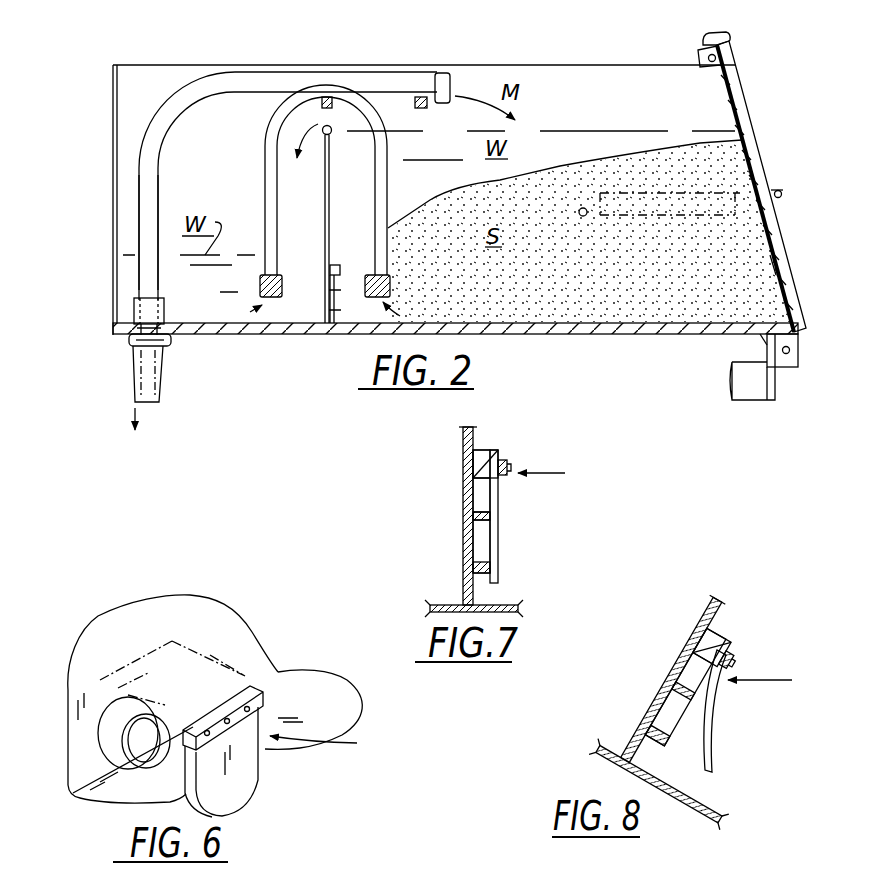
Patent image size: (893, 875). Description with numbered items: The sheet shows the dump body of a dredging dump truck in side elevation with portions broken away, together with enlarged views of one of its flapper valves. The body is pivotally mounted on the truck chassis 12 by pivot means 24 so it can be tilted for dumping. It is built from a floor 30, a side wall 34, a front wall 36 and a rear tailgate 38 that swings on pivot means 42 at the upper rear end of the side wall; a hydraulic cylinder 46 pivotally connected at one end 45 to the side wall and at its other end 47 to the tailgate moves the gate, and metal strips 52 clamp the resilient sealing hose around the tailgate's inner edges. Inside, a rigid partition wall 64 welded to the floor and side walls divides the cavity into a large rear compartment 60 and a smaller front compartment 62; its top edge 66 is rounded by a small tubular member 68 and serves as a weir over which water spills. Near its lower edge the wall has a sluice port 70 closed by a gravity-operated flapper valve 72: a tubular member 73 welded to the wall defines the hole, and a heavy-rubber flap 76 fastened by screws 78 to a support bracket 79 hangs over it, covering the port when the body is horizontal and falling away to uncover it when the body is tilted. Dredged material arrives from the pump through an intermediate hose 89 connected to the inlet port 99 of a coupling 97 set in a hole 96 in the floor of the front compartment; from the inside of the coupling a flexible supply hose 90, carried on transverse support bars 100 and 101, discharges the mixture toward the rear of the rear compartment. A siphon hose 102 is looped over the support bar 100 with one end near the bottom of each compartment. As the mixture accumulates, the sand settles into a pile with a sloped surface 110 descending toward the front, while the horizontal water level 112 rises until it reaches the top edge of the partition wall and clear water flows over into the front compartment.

In FIG. 2, the chassis 12 is at (755, 395).
In FIG. 2, the pivot means 24 is at (800, 350).
In FIG. 2, the floor 30 is at (285, 337).
In FIG. 7, the floor 30 is at (495, 606).
In FIG. 6, the floor 30 is at (303, 718).
In FIG. 8, the floor 30 is at (659, 784).
In FIG. 2, the side wall 34 is at (538, 48).
In FIG. 2, the front wall 36 is at (113, 189).
In FIG. 2, the rear tailgate 38 is at (785, 250).
In FIG. 2, the pivot means 42 is at (708, 56).
In FIG. 2, the cylinder end 45 is at (583, 218).
In FIG. 2, the hydraulic cylinder 46 is at (760, 212).
In FIG. 2, the cylinder end 47 is at (782, 193).
In FIG. 2, the metal strips 52 is at (779, 262).
In FIG. 2, the rear compartment 60 is at (580, 74).
In FIG. 2, the front compartment 62 is at (183, 36).
In FIG. 2, the partition wall 64 is at (325, 200).
In FIG. 7, the partition wall 64 is at (462, 455).
In FIG. 6, the partition wall 64 is at (215, 632).
In FIG. 8, the partition wall 64 is at (446, 382).
In FIG. 2, the top edge 66 is at (303, 134).
In FIG. 2, the tubular member 68 is at (333, 137).
In FIG. 2, the sluice port 70 is at (328, 302).
In FIG. 7, the sluice port 70 is at (482, 527).
In FIG. 6, the sluice port 70 is at (136, 748).
In FIG. 8, the sluice port 70 is at (685, 687).
In FIG. 7, the flapper valve 72 is at (553, 472).
In FIG. 6, the flapper valve 72 is at (322, 749).
In FIG. 8, the flapper valve 72 is at (774, 682).
In FIG. 7, the tubular member 73 is at (475, 564).
In FIG. 8, the tubular member 73 is at (657, 735).
In FIG. 7, the flap 76 is at (498, 552).
In FIG. 6, the flap 76 is at (218, 788).
In FIG. 8, the flap 76 is at (713, 760).
In FIG. 7, the screws 78 is at (510, 466).
In FIG. 8, the screws 78 is at (728, 660).
In FIG. 7, the support bracket 79 is at (485, 450).
In FIG. 6, the support bracket 79 is at (225, 700).
In FIG. 8, the support bracket 79 is at (712, 647).
In FIG. 2, the intermediate hose 89 is at (163, 388).
In FIG. 2, the supply hose 90 is at (159, 176).
In FIG. 2, the hole 96 is at (165, 322).
In FIG. 2, the coupling 97 is at (129, 340).
In FIG. 2, the inlet port 99 is at (134, 305).
In FIG. 2, the support bar 100 is at (328, 96).
In FIG. 2, the support bar 101 is at (427, 104).
In FIG. 2, the siphon hose 102 is at (389, 178).
In FIG. 2, the sloped surface 110 is at (592, 166).
In FIG. 2, the water level 112 is at (582, 131).